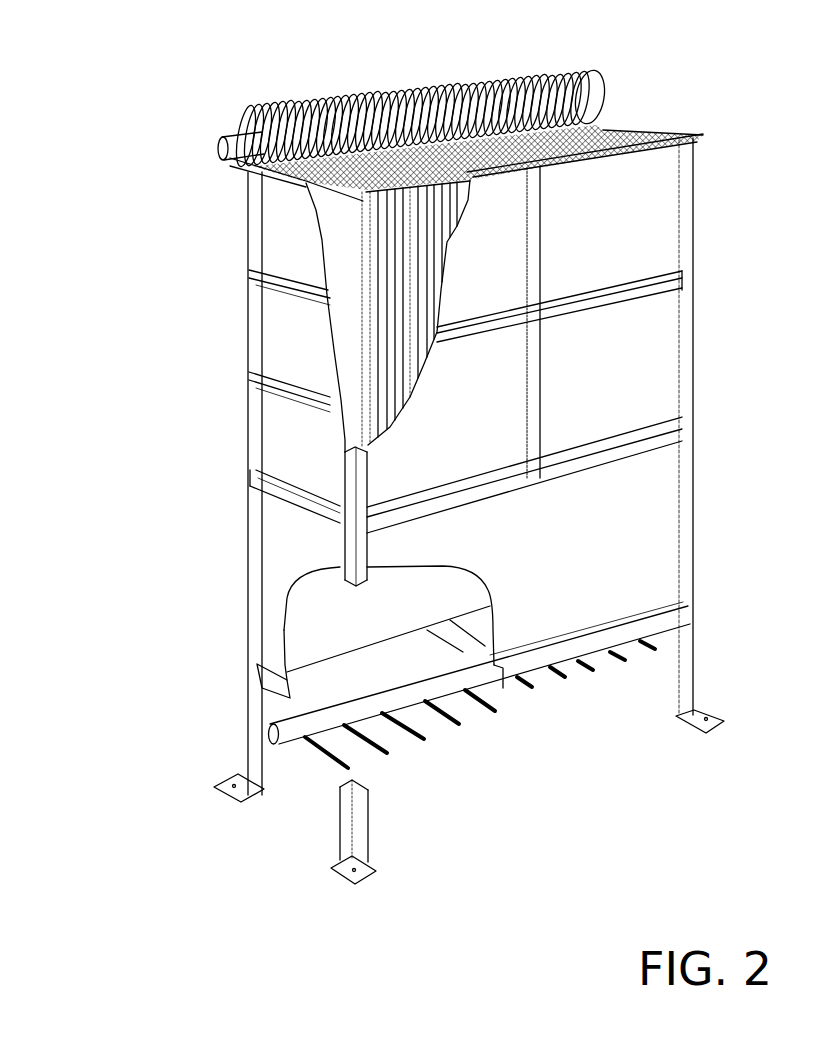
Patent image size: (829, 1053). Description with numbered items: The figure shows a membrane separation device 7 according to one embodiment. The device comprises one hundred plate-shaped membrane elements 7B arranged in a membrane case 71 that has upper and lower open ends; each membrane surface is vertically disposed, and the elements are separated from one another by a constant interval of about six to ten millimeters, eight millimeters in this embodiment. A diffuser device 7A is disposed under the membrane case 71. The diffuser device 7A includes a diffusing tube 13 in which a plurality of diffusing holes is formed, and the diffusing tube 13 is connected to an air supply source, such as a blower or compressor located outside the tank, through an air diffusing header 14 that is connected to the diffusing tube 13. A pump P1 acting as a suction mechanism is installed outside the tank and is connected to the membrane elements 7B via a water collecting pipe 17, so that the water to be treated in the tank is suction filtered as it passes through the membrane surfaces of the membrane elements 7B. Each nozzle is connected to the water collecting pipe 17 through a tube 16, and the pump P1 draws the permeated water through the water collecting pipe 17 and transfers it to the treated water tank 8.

The membrane separation device 7 is at (507, 504).
The diffuser device 7A is at (480, 748).
The membrane element 7B is at (438, 231).
The treated water tank 8 is at (262, 739).
The diffusing tube 13 is at (470, 718).
The air diffusing header 14 is at (426, 728).
The tube 16 is at (331, 105).
The water collecting pipe 17 is at (233, 140).
The membrane case 71 is at (681, 218).
The pump P1 is at (221, 143).